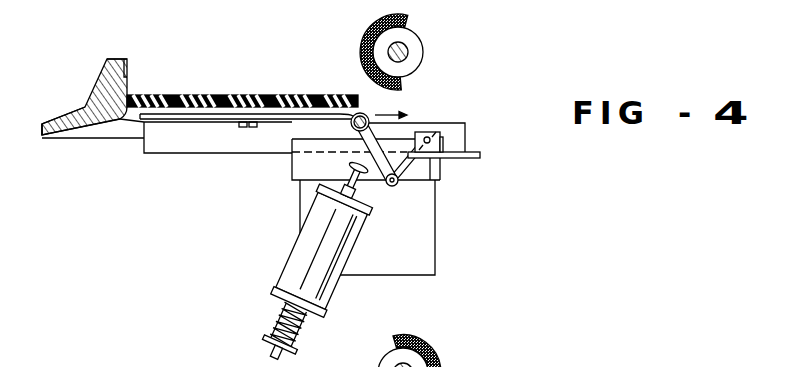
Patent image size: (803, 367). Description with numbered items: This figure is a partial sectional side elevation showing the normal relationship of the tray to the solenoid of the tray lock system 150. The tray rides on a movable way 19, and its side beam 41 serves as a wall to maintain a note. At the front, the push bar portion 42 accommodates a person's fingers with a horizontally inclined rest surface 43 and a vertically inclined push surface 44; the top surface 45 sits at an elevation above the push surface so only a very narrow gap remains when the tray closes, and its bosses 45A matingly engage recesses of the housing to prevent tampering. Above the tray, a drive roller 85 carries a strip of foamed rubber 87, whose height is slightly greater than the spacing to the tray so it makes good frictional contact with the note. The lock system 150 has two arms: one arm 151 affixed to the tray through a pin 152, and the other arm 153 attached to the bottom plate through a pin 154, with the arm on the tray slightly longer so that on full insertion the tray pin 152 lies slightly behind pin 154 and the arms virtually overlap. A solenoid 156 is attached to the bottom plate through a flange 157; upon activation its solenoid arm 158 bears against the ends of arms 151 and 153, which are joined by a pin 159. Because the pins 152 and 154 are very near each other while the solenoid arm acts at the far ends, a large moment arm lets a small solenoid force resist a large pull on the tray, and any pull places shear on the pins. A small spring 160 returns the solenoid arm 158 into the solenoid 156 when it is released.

The movable way 19 is at (192, 142).
The side beam 41 is at (237, 95).
The push bar portion 42 is at (108, 58).
The rest surface 43 is at (53, 123).
The push surface 44 is at (95, 92).
The top surface 45 is at (112, 57).
The boss 45A is at (133, 70).
The drive roller 85 is at (417, 50).
The foamed rubber strip 87 is at (362, 47).
The tray lock system 150 is at (440, 204).
The arm 151 is at (360, 137).
The pin 152 is at (366, 116).
The arm 153 is at (413, 165).
The pin 154 is at (437, 135).
The solenoid 156 is at (290, 273).
The flange 157 is at (423, 262).
The solenoid arm 158 is at (370, 176).
The pin 159 is at (399, 183).
The spring 160 is at (274, 322).